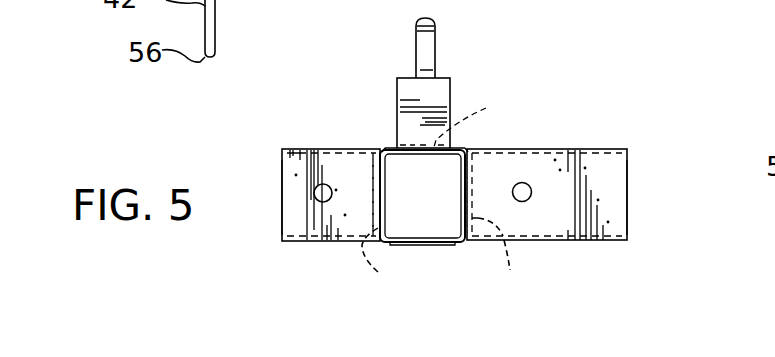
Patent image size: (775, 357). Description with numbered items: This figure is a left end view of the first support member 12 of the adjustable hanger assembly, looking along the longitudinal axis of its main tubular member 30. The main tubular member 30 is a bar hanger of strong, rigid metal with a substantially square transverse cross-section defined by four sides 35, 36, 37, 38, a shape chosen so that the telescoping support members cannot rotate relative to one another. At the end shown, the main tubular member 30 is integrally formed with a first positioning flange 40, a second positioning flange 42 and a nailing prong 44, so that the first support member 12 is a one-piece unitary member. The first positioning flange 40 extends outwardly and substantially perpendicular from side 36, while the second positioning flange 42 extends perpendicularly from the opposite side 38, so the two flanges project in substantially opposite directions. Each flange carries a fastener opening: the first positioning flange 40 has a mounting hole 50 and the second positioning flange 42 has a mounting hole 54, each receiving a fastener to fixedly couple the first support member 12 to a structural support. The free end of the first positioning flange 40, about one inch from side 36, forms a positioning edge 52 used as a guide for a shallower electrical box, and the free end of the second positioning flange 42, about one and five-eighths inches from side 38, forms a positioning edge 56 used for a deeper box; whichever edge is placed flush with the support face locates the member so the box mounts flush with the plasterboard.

The first support member 12 is at (533, 72).
The main tubular member 30 is at (390, 148).
The side 35 is at (422, 245).
The side 36 is at (380, 231).
The side 37 is at (461, 117).
The side 38 is at (503, 260).
The first positioning flange 40 is at (304, 149).
The second positioning flange 42 is at (585, 149).
The nailing prong 44 is at (436, 44).
The mounting hole 50 is at (322, 200).
The positioning edge 52 is at (282, 226).
The mounting hole 54 is at (524, 197).
The positioning edge 56 is at (630, 182).